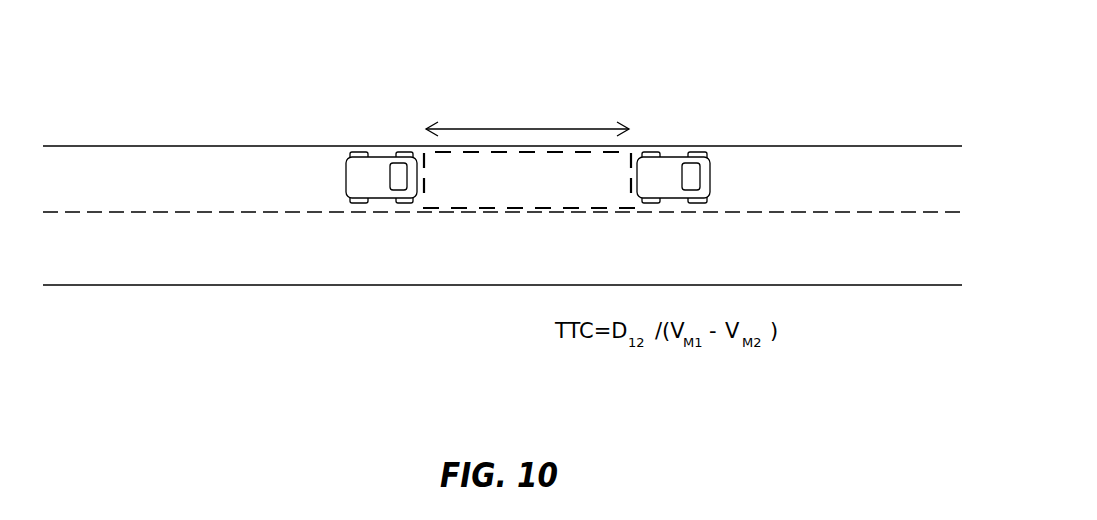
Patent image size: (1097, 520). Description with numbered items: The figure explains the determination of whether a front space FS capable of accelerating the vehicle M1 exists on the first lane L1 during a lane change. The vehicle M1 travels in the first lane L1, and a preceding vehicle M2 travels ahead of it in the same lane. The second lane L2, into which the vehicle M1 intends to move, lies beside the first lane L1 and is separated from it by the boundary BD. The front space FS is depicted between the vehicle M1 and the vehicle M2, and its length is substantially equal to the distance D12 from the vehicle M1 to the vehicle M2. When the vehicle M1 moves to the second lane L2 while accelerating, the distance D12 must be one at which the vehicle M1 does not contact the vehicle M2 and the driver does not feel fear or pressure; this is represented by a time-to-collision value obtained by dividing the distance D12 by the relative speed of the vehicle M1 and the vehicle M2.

The first lane L1 is at (77, 162).
The second lane L2 is at (86, 271).
The vehicle M1 is at (378, 157).
The vehicle M2 is at (670, 157).
The front space FS is at (490, 150).
The boundary BD is at (416, 212).
The distance D12 is at (579, 130).